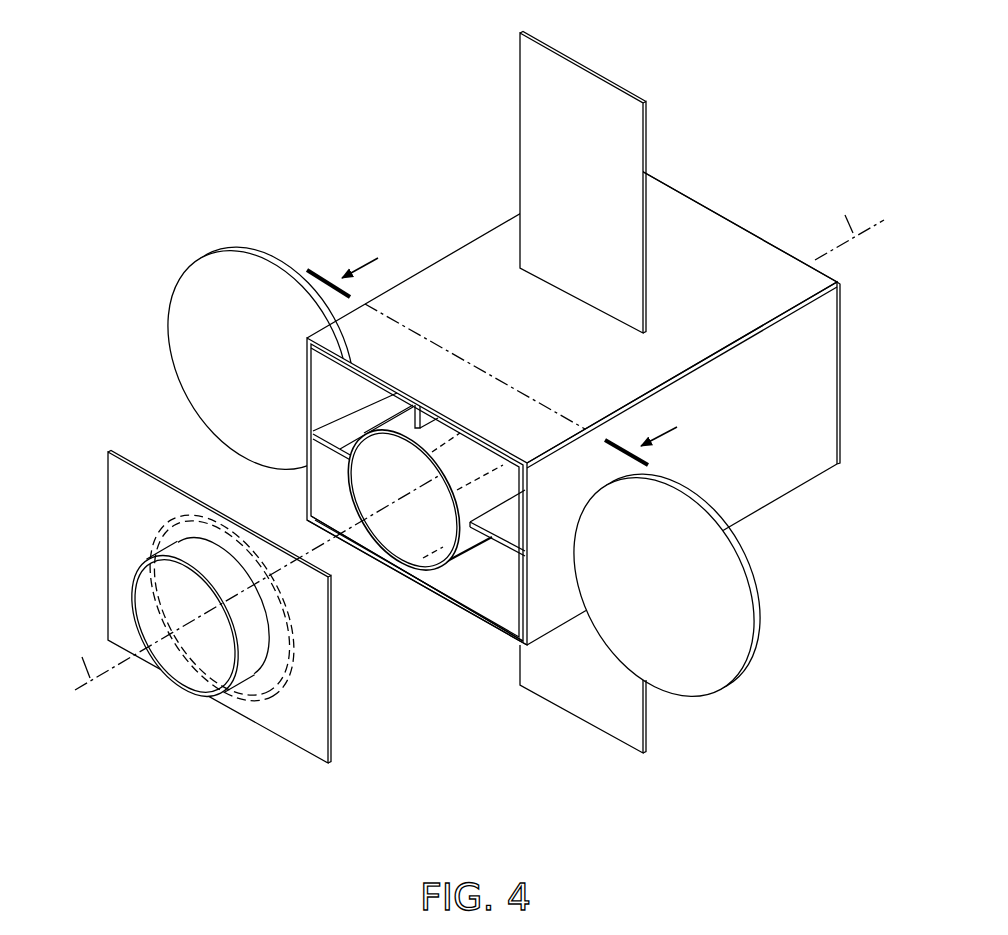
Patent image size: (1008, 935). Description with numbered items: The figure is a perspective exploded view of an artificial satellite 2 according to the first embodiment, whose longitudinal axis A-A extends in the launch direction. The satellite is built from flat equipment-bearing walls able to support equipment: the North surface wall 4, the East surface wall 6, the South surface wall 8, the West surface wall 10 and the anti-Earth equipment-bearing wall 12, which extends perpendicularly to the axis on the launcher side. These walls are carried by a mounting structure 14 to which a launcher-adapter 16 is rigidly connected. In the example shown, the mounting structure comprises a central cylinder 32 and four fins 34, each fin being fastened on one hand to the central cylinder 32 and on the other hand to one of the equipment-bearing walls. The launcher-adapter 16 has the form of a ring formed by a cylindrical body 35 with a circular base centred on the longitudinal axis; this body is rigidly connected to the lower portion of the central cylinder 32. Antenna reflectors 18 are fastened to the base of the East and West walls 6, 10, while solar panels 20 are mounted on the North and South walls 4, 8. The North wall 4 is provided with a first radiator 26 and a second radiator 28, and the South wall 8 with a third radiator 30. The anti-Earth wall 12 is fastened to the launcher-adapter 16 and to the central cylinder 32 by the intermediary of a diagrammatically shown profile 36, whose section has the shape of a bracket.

The artificial satellite 2 is at (477, 447).
The equipment-bearing wall of the North surface 4 is at (572, 310).
The first radiator 26 is at (428, 290).
The equipment-bearing wall of the East surface 6 is at (773, 473).
The equipment-bearing wall of the South surface 8 is at (417, 627).
The third radiator 30 is at (498, 632).
The equipment-bearing wall of the West surface 10 is at (308, 502).
The anti-Earth equipment-bearing wall 12 is at (312, 723).
The mounting structure 14 is at (414, 544).
The launcher-adapter 16 is at (200, 641).
The antenna reflectors 18 is at (200, 287).
The solar panels 20 is at (572, 92).
The second radiator 28 is at (720, 237).
The central cylinder 32 is at (405, 552).
The fins 34 is at (335, 430).
The cylindrical body 35 is at (148, 657).
The profile 36 is at (258, 692).